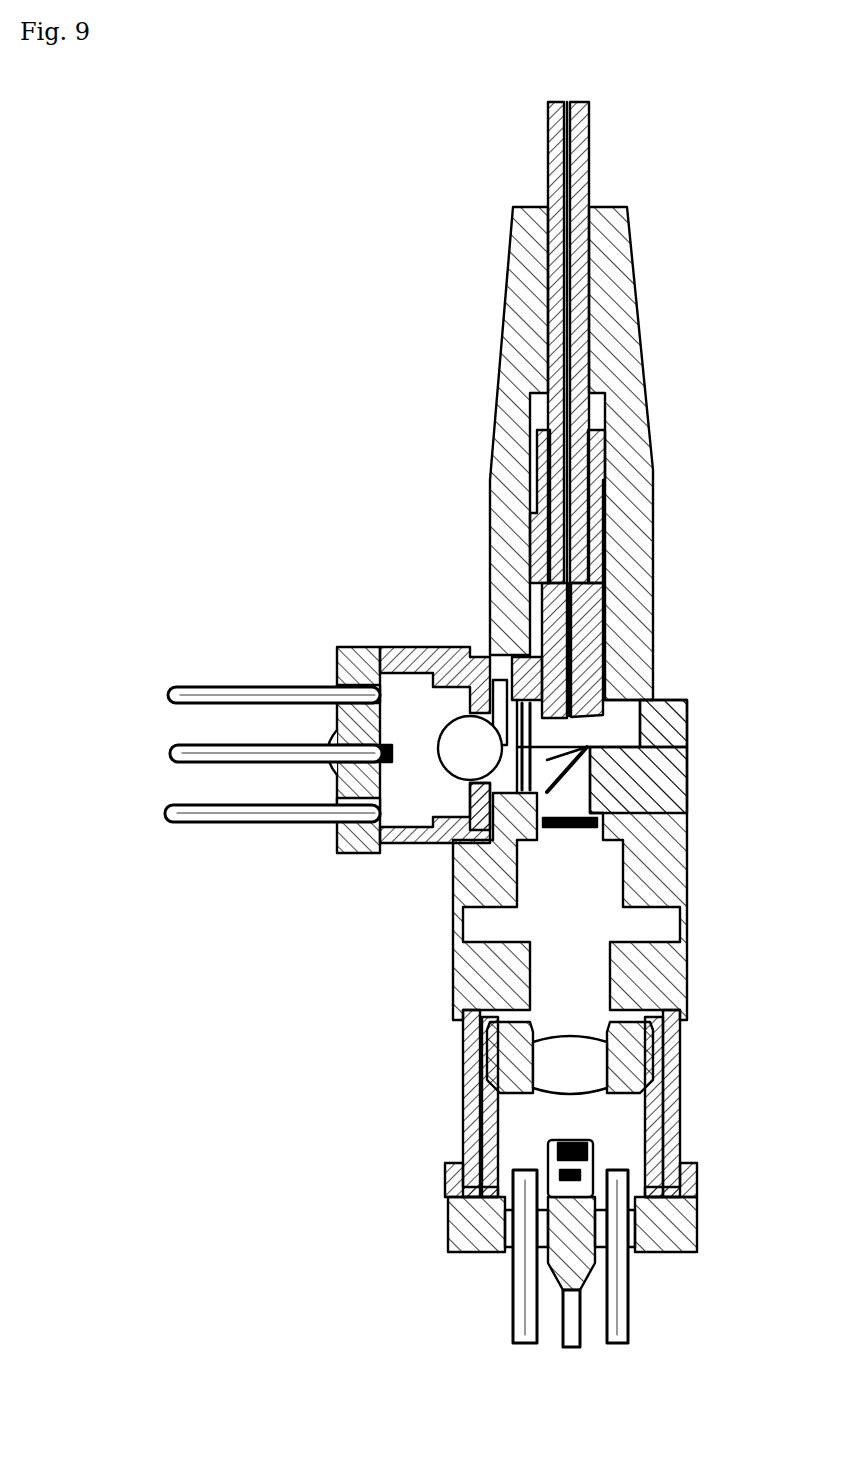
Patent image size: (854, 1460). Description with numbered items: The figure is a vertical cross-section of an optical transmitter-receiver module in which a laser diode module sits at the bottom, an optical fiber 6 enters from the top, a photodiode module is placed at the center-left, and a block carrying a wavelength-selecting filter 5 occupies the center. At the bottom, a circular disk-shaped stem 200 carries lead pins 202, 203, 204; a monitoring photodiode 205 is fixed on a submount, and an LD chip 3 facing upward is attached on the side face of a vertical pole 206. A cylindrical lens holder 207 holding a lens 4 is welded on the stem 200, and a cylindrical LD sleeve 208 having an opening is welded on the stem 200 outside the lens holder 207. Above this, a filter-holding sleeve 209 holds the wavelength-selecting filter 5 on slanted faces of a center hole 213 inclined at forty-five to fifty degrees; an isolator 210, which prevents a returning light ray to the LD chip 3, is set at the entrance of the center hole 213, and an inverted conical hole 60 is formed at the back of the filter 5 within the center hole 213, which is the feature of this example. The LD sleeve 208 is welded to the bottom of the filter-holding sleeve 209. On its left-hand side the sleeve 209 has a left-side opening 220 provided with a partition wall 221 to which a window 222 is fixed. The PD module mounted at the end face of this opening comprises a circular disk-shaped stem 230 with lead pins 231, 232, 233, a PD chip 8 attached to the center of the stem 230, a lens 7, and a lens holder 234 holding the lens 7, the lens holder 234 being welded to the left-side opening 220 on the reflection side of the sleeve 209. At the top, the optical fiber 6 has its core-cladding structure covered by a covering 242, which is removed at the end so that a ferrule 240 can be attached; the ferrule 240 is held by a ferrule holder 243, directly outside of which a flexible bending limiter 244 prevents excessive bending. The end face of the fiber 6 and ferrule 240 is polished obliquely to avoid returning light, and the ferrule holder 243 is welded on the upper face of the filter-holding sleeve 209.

The LD chip 3 is at (575, 1152).
The lens 4 is at (570, 1065).
The wavelength-selecting filter 5 is at (640, 743).
The optical fiber 6 is at (580, 650).
The lens 7 is at (470, 748).
The PD chip 8 is at (392, 756).
The inverted conical hole 60 is at (590, 765).
The stem 200 is at (490, 1240).
The lead pin 202 is at (520, 1343).
The lead pin 203 is at (570, 1347).
The lead pin 204 is at (617, 1343).
The monitoring photodiode 205 is at (582, 1180).
The vertical pole 206 is at (645, 1165).
The lens holder 207 is at (500, 1075).
The LD sleeve 208 is at (470, 1055).
The filter-holding sleeve 209 is at (665, 880).
The isolator 210 is at (573, 828).
The center hole 213 is at (687, 815).
The left-side opening 220 is at (490, 653).
The partition wall 221 is at (520, 703).
The window 222 is at (478, 835).
The stem 230 is at (355, 770).
The lead pin 231 is at (220, 687).
The lead pin 232 is at (215, 745).
The lead pin 233 is at (215, 805).
The lens holder 234 is at (420, 647).
The ferrule 240 is at (603, 610).
The covering 242 is at (585, 497).
The ferrule holder 243 is at (503, 463).
The flexible bending limiter 244 is at (517, 350).